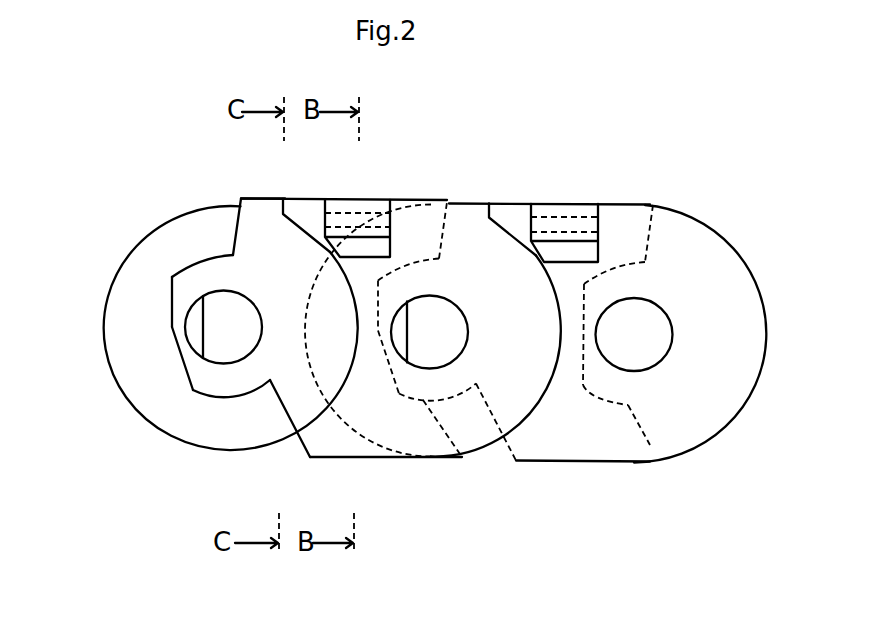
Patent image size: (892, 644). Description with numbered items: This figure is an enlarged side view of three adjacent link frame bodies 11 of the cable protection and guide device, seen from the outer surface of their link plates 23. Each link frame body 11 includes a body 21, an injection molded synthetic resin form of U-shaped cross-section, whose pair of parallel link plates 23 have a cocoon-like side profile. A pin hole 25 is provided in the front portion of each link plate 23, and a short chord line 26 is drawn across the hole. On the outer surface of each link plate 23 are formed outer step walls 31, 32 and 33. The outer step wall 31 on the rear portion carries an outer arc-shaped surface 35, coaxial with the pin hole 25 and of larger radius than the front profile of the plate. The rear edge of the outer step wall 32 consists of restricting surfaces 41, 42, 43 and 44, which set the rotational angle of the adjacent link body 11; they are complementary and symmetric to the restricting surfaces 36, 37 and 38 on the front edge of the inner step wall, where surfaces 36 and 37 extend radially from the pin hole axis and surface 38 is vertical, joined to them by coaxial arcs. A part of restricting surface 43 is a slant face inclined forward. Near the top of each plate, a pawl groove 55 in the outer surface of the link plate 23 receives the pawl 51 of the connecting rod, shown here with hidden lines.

The link frame body 11 is at (153, 222).
The body 21 is at (383, 460).
The link plate 23 is at (340, 458).
The pin hole 25 is at (247, 296).
The flat chord of pin hole 26 is at (250, 338).
The outer step wall 31 is at (469, 226).
The outer step wall 32 is at (255, 198).
The outer step wall 33 is at (138, 255).
The outer arc-shaped surface 35 is at (336, 360).
The restricting surface 36 is at (672, 207).
The restricting surface 37 is at (462, 457).
The restricting surface 38 is at (583, 290).
The restricting surface 41 is at (235, 232).
The restricting surface 42 is at (280, 407).
The restricting surface 43 is at (172, 298).
The restricting surface 44 is at (182, 360).
The pawl 51 is at (378, 200).
The pawl groove 55 is at (337, 200).